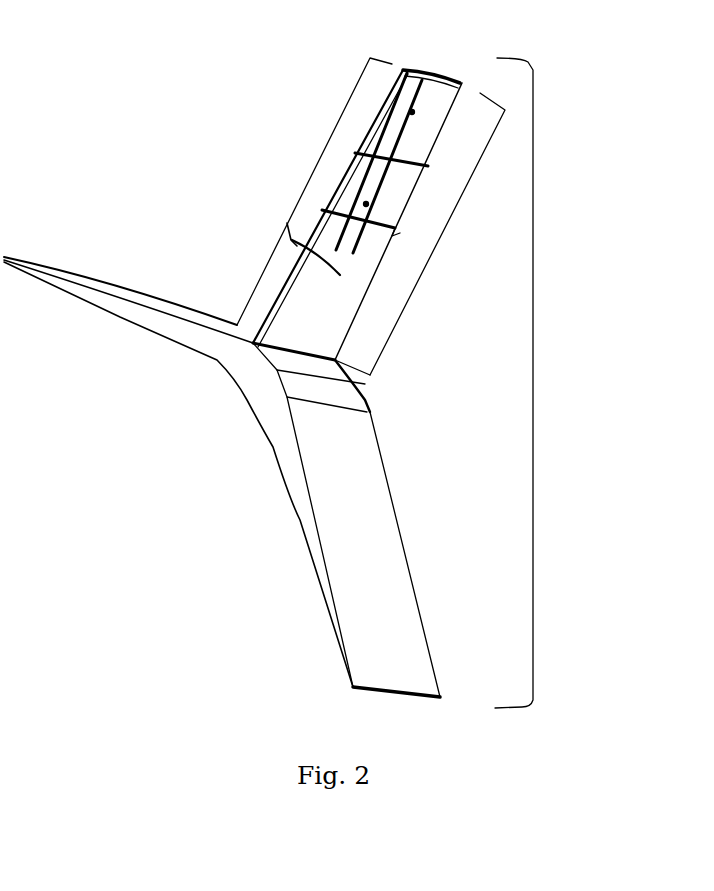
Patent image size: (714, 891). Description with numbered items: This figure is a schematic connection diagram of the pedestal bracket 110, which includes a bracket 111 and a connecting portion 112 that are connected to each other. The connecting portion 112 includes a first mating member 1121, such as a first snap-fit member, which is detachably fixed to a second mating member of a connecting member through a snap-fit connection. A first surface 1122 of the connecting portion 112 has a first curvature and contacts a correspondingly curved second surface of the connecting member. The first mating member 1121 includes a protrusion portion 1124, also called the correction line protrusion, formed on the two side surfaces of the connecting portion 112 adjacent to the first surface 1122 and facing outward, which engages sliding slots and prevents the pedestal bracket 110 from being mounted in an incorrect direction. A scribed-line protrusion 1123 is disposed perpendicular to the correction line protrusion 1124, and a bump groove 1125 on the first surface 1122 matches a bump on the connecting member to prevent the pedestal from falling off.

The pedestal bracket 110 is at (533, 384).
The bracket 111 is at (63, 298).
The connecting portion 112 is at (440, 243).
The first mating member 1121 is at (350, 168).
The first surface 1122 is at (297, 246).
The scribed-line protrusion 1123 is at (393, 233).
The protrusion portion 1124 is at (452, 80).
The bump groove 1125 is at (366, 203).